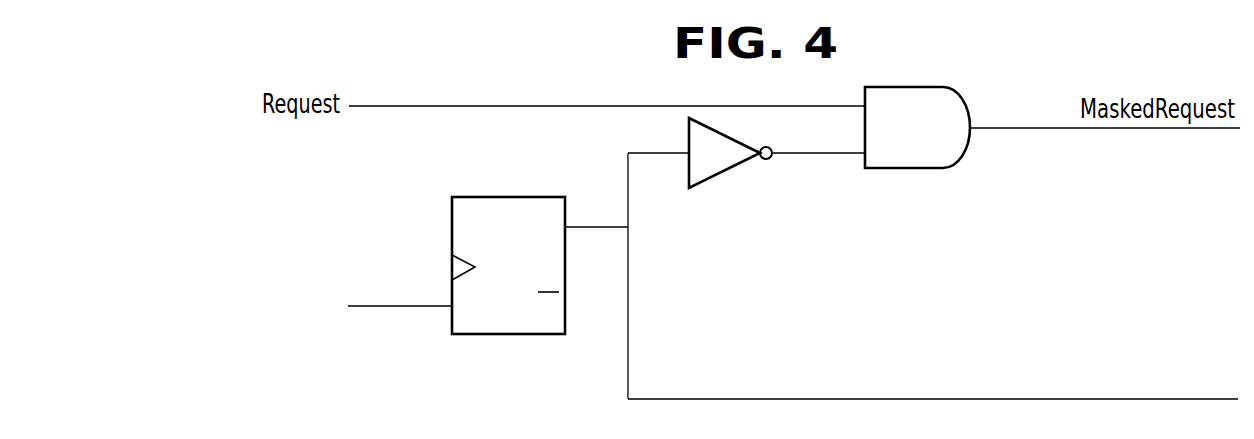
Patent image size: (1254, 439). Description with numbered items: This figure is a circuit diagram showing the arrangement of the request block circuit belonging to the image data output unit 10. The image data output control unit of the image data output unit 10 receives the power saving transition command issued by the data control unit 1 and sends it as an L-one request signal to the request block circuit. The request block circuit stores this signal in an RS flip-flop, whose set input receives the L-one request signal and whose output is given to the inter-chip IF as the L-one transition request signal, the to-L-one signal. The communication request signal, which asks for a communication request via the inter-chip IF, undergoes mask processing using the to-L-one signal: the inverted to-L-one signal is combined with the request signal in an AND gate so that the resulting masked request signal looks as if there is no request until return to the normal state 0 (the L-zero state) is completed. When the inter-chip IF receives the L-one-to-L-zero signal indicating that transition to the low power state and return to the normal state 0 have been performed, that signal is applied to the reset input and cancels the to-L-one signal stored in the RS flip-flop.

The data control unit 1 is at (452, 227).
The L1toL0 reset input 0 is at (363, 306).
The image data output unit 10 is at (933, 276).